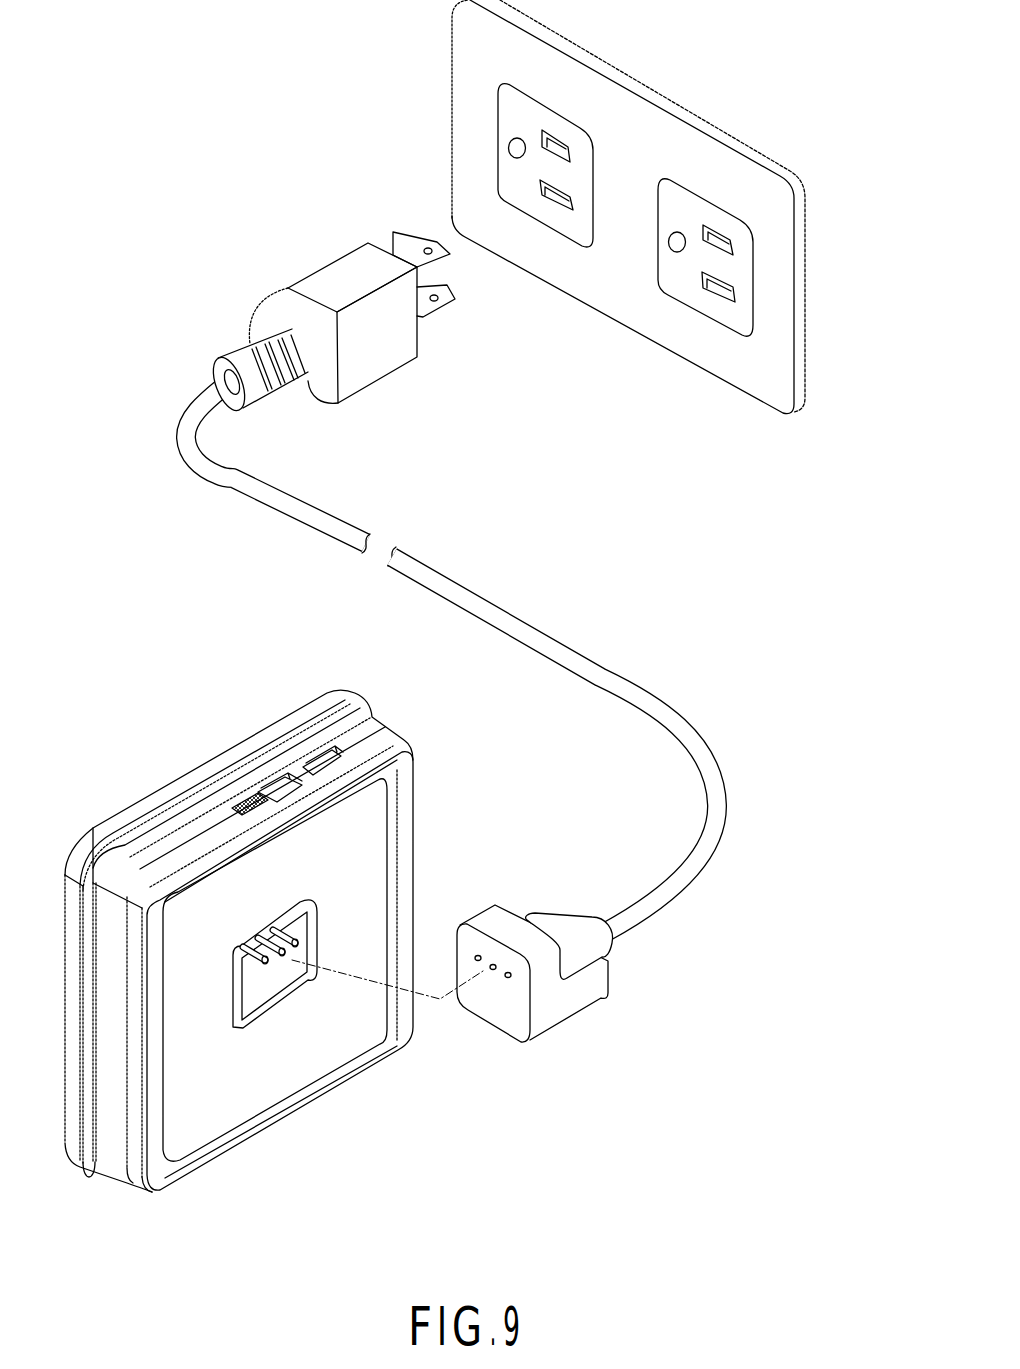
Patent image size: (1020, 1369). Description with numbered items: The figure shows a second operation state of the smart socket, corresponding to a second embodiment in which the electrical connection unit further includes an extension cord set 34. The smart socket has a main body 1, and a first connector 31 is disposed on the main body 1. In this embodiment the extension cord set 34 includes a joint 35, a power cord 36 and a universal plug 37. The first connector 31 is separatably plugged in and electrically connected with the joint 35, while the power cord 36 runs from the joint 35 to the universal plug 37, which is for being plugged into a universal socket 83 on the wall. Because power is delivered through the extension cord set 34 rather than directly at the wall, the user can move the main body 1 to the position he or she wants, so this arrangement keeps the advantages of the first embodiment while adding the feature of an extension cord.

The main body 1 is at (239, 931).
The first connector 31 is at (270, 972).
The extension cord set 34 is at (686, 896).
The joint 35 is at (565, 1002).
The power cord 36 is at (290, 515).
The universal plug 37 is at (335, 280).
The universal socket 83 is at (465, 87).